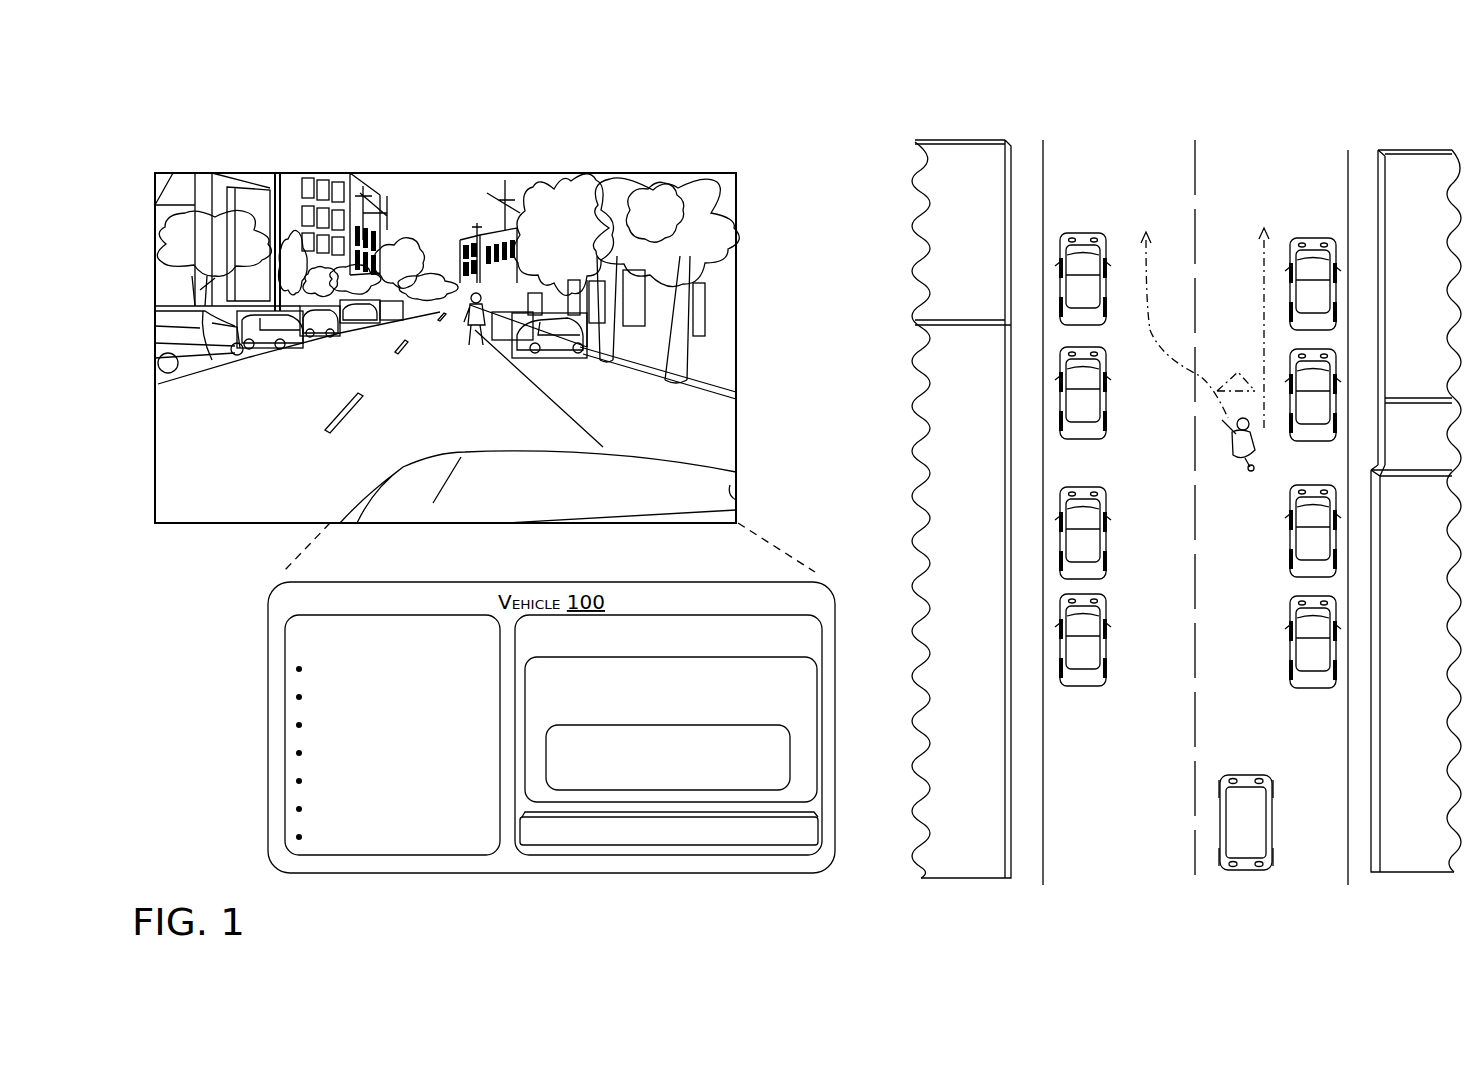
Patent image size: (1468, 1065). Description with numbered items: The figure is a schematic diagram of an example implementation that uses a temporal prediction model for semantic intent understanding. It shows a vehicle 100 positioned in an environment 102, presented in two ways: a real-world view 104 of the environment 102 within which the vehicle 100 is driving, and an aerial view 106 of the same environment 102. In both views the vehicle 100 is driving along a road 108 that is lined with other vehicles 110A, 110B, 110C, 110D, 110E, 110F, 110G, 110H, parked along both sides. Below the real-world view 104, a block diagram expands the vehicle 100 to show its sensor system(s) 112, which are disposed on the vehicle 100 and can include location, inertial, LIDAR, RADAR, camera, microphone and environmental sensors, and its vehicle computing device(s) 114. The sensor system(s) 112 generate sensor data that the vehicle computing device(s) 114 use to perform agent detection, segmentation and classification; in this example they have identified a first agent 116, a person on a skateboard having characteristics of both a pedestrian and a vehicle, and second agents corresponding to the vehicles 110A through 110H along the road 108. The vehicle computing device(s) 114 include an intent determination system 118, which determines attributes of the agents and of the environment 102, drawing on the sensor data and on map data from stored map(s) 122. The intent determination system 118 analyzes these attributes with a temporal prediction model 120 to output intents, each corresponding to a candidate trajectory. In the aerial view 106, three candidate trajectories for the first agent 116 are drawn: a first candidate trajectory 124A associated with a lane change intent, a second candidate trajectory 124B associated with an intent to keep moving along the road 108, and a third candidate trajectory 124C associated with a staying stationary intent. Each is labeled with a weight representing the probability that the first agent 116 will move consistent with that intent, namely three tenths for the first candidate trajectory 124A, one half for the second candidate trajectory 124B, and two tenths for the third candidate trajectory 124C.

The vehicle 100 is at (724, 493).
The environment 102 is at (193, 197).
The real-world view 104 is at (405, 127).
The aerial view 106 is at (1226, 135).
The road 108 is at (152, 470).
The vehicle 110A is at (585, 310).
The vehicle 110B is at (1315, 545).
The vehicle 110C is at (1315, 418).
The vehicle 110D is at (1315, 292).
The vehicle 110E is at (158, 322).
The vehicle 110F is at (1078, 543).
The vehicle 110G is at (1078, 402).
The vehicle 110H is at (1078, 290).
The sensor system(s) 112 is at (392, 735).
The vehicle computing device(s) 114 is at (668, 735).
The first agent 116 is at (488, 292).
The intent determination system 118 is at (671, 729).
The temporal prediction model 120 is at (668, 757).
The map(s) 122 is at (669, 828).
The first candidate trajectory 124A is at (1140, 270).
The second candidate trajectory 124B is at (1260, 265).
The third candidate trajectory 124C is at (1228, 380).